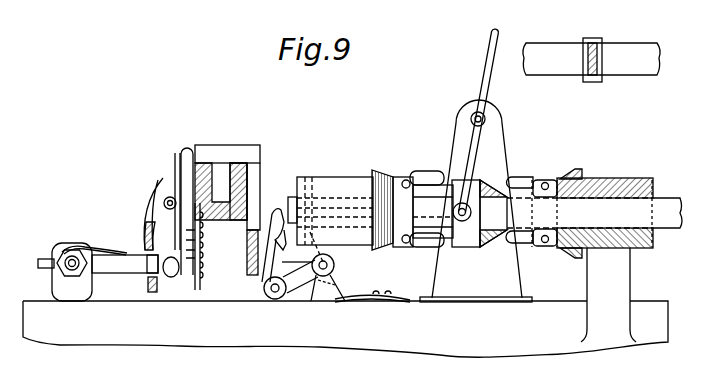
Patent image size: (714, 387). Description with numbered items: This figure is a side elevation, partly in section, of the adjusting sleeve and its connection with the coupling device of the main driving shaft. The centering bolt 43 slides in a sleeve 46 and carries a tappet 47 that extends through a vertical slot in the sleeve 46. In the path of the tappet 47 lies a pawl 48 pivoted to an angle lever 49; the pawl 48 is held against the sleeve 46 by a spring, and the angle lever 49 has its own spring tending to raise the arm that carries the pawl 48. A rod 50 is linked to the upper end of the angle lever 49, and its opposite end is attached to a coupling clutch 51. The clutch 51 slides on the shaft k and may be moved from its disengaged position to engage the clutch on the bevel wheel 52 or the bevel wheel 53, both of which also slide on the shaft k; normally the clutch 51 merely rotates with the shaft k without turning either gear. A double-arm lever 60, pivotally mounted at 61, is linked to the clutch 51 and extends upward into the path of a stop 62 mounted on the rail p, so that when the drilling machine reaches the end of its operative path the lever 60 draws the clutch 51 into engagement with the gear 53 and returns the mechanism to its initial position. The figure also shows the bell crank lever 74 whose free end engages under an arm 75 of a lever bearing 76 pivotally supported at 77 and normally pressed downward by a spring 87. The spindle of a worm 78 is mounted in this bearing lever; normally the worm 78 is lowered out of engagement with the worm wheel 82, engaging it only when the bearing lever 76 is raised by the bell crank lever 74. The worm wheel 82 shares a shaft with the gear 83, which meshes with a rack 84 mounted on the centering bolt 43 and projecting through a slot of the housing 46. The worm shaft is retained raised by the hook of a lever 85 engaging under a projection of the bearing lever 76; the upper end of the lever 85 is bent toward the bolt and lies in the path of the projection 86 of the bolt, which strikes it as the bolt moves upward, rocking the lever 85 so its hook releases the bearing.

The centering bolt 43 is at (242, 178).
The sleeve 46 is at (258, 145).
The tappet 47 is at (258, 218).
The pawl 48 is at (268, 276).
The angle lever 49 is at (331, 260).
The rod 50 is at (328, 203).
The coupling clutch 51 is at (478, 239).
The bevel wheel 52 is at (379, 174).
The bevel wheel 53 is at (569, 173).
The double-arm lever 60 is at (490, 70).
The pivot 61 is at (485, 120).
The stop 62 is at (592, 44).
The bell crank lever 74 is at (152, 293).
The arm 75 is at (152, 261).
The lever bearing 76 is at (120, 267).
The pivot 77 is at (68, 259).
The worm 78 is at (179, 277).
The worm wheel 82 is at (193, 254).
The gear 83 is at (188, 236).
The rack 84 is at (198, 288).
The lever 85 is at (181, 149).
The projection 86 is at (192, 203).
The spring 87 is at (98, 248).
The rail p is at (637, 50).
The shaft k is at (667, 222).